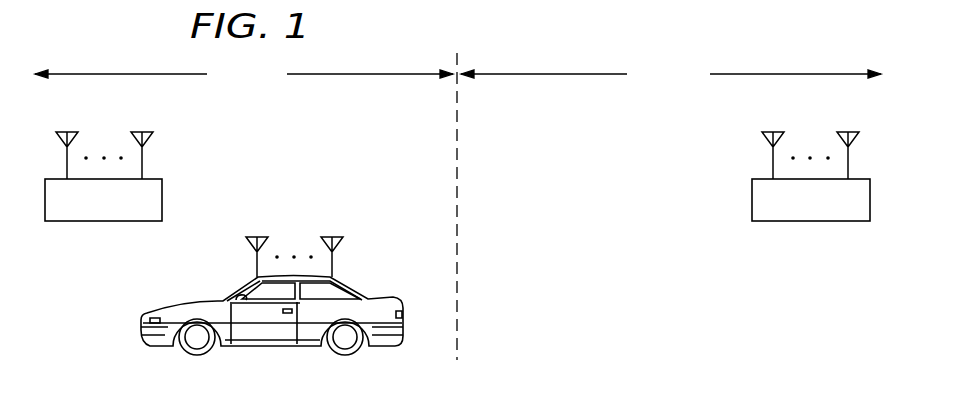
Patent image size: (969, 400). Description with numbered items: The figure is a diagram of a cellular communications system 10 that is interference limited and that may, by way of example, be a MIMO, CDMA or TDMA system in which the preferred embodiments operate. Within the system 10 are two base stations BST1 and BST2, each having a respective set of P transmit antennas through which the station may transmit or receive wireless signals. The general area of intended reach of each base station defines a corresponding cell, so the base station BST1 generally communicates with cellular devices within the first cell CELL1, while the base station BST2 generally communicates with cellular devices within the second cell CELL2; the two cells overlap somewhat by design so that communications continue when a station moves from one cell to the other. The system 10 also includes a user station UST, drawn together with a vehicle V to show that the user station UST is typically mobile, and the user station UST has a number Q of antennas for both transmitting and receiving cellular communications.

The cellular communications system 10 is at (757, 51).
The Cell 1 CELL1 is at (244, 74).
The Cell 2 CELL2 is at (671, 74).
The base station BST1 is at (104, 160).
The base station BST2 is at (811, 160).
The user station UST is at (366, 276).
The vehicle V is at (180, 304).